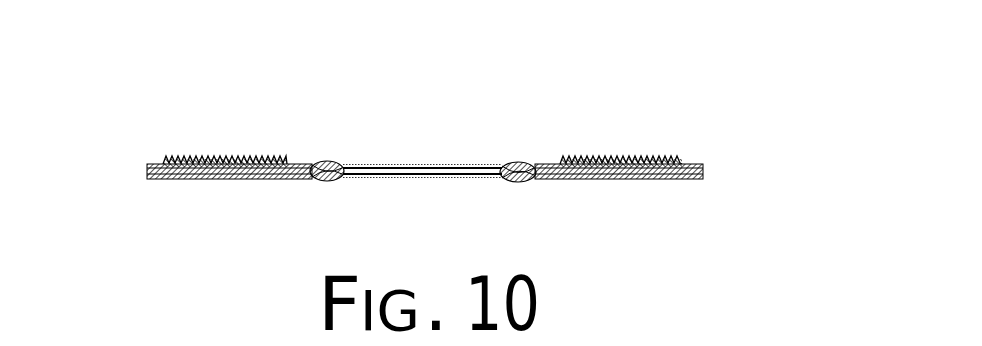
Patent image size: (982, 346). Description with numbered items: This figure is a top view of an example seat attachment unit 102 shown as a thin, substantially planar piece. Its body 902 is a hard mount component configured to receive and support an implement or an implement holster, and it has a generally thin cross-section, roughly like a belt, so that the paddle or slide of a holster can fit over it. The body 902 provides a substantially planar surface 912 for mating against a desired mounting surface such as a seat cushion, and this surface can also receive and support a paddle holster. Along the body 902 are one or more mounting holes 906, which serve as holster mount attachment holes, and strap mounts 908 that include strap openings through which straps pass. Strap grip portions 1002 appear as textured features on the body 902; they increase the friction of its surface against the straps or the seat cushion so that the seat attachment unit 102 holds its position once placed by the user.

The seat attachment unit 102 is at (777, 59).
The hard mount component 902 is at (147, 172).
The mounting holes 906 is at (522, 175).
The strap mounts 908 is at (253, 172).
The planar surface 912 is at (452, 152).
The strap grip portions 1002 is at (228, 157).